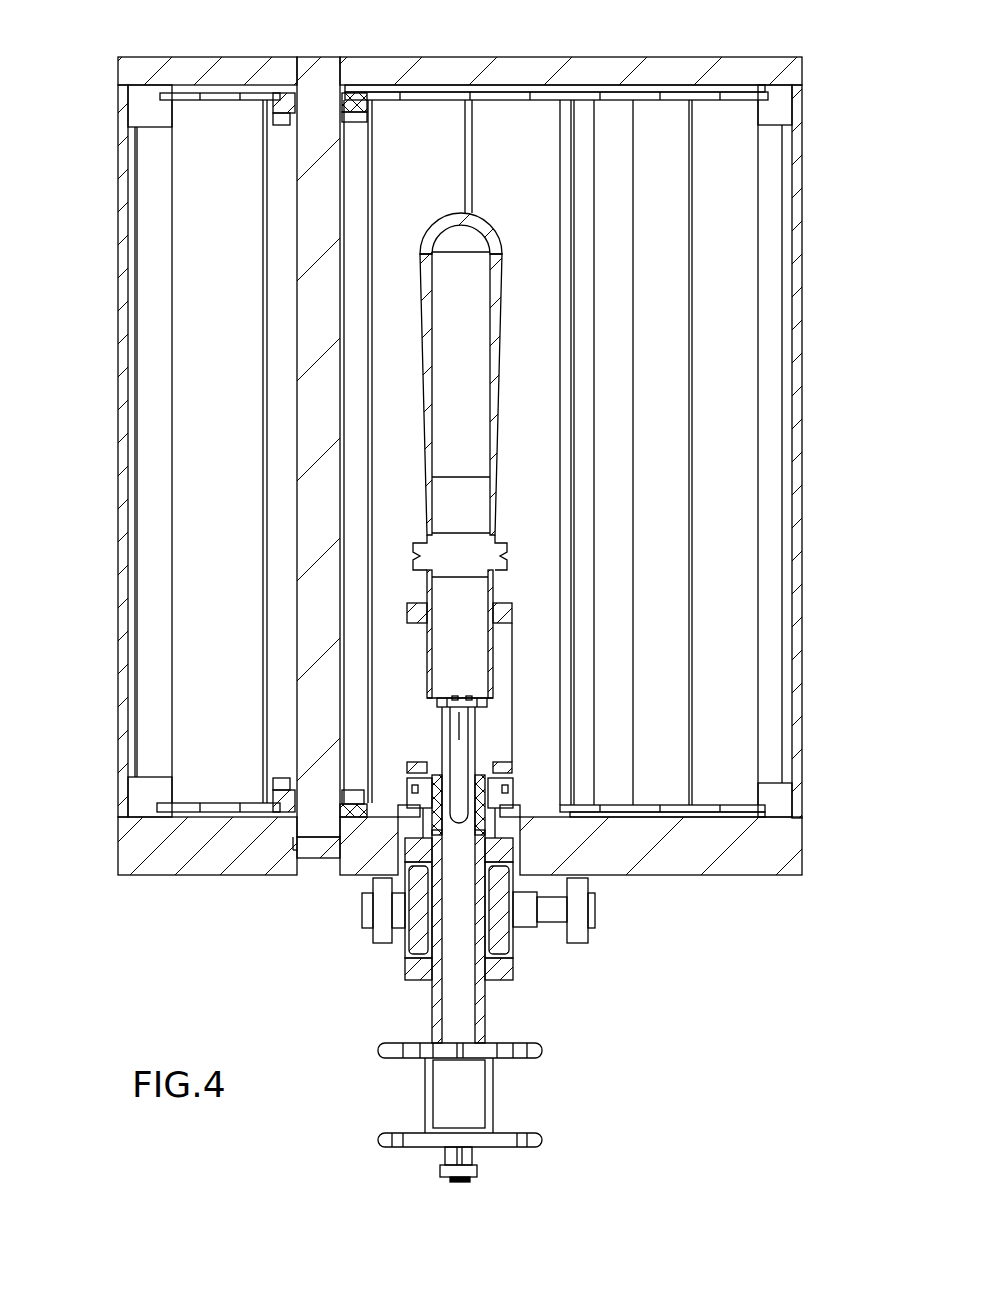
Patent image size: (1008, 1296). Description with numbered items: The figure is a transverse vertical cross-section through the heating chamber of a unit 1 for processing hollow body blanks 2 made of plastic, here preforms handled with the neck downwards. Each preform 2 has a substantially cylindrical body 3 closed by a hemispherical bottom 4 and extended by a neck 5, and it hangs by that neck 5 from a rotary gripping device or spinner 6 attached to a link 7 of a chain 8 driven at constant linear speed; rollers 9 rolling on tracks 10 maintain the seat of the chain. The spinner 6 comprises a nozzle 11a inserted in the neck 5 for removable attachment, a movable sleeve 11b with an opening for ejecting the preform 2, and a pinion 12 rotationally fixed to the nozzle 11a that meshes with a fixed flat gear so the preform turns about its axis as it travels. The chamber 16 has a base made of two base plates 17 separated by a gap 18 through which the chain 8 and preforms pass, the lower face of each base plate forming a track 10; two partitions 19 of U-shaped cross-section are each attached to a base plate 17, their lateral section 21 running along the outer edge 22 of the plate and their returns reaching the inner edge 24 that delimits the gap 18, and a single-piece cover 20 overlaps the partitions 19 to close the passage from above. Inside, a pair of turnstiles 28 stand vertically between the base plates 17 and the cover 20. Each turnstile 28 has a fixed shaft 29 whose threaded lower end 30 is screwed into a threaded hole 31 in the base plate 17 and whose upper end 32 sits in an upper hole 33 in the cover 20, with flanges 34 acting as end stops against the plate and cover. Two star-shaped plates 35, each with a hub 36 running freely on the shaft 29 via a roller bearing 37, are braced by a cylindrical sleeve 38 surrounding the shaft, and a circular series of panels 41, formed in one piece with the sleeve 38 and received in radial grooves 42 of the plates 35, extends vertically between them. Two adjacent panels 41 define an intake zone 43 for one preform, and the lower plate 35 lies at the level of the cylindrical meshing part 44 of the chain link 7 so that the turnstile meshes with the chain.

The unit 1 is at (866, 230).
The hollow body blank 2 is at (502, 328).
The body 3 is at (495, 368).
The hemispherical bottom 4 is at (483, 230).
The neck 5 is at (495, 588).
The rotary gripping device 6 is at (513, 675).
The link 7 is at (492, 905).
The chain 8 is at (512, 830).
The roller 9 is at (378, 930).
The track 10 is at (370, 882).
The nozzle 11a is at (430, 667).
The movable sleeve 11b is at (512, 700).
The pinion 12 is at (548, 1048).
The chamber 16 is at (118, 57).
The base plate 17 is at (172, 867).
The gap 18 is at (403, 827).
The partition 19 is at (118, 493).
The cover 20 is at (742, 65).
The lateral section 21 is at (123, 418).
The outer edge 22 is at (118, 832).
The inner edge 24 is at (405, 848).
The turnstile 28 is at (170, 330).
The fixed shaft 29 is at (310, 235).
The threaded lower end 30 is at (310, 853).
The threaded hole 31 is at (291, 848).
The upper end 32 is at (328, 57).
The upper hole 33 is at (340, 78).
The flange 34 is at (358, 98).
The star-shaped plate 35 is at (221, 98).
The hub 36 is at (280, 120).
The roller bearing 37 is at (287, 107).
The cylindrical sleeve 38 is at (373, 175).
The panel 41 is at (192, 553).
The groove 42 is at (693, 807).
The intake zone 43 is at (447, 147).
The cylindrical meshing part 44 is at (508, 810).